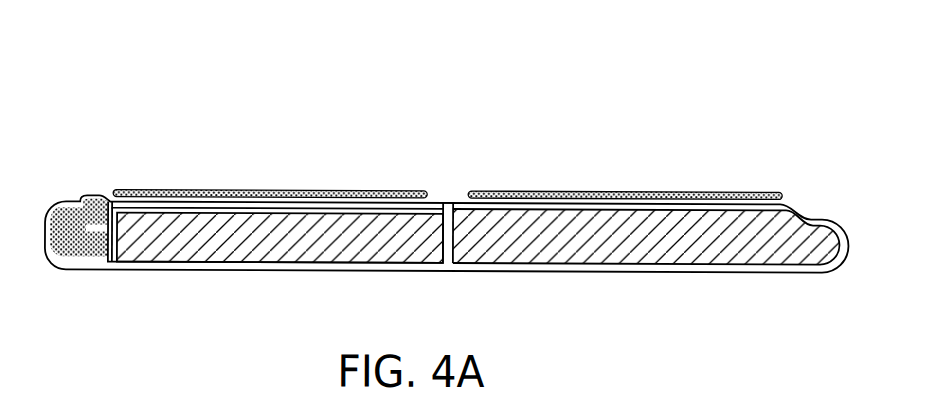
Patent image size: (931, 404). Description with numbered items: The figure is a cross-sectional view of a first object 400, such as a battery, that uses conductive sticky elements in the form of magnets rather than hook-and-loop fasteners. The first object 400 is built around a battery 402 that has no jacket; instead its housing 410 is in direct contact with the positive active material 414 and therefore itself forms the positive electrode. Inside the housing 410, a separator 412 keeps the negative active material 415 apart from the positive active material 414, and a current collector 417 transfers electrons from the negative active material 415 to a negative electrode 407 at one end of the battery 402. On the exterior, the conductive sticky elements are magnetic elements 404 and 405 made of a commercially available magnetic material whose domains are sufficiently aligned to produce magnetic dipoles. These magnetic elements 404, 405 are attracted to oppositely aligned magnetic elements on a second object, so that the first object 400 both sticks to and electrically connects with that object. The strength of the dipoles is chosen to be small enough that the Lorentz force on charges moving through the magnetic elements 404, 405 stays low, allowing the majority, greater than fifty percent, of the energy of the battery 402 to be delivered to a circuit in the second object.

The first object 400 is at (288, 90).
The battery 402 is at (613, 266).
The magnetic element 404 is at (773, 193).
The magnetic element 405 is at (121, 189).
The negative electrode 407 is at (171, 191).
The housing 410 is at (107, 263).
The separator 412 is at (448, 208).
The positive active material 414 is at (623, 235).
The negative active material 415 is at (363, 232).
The current collector 417 is at (262, 213).